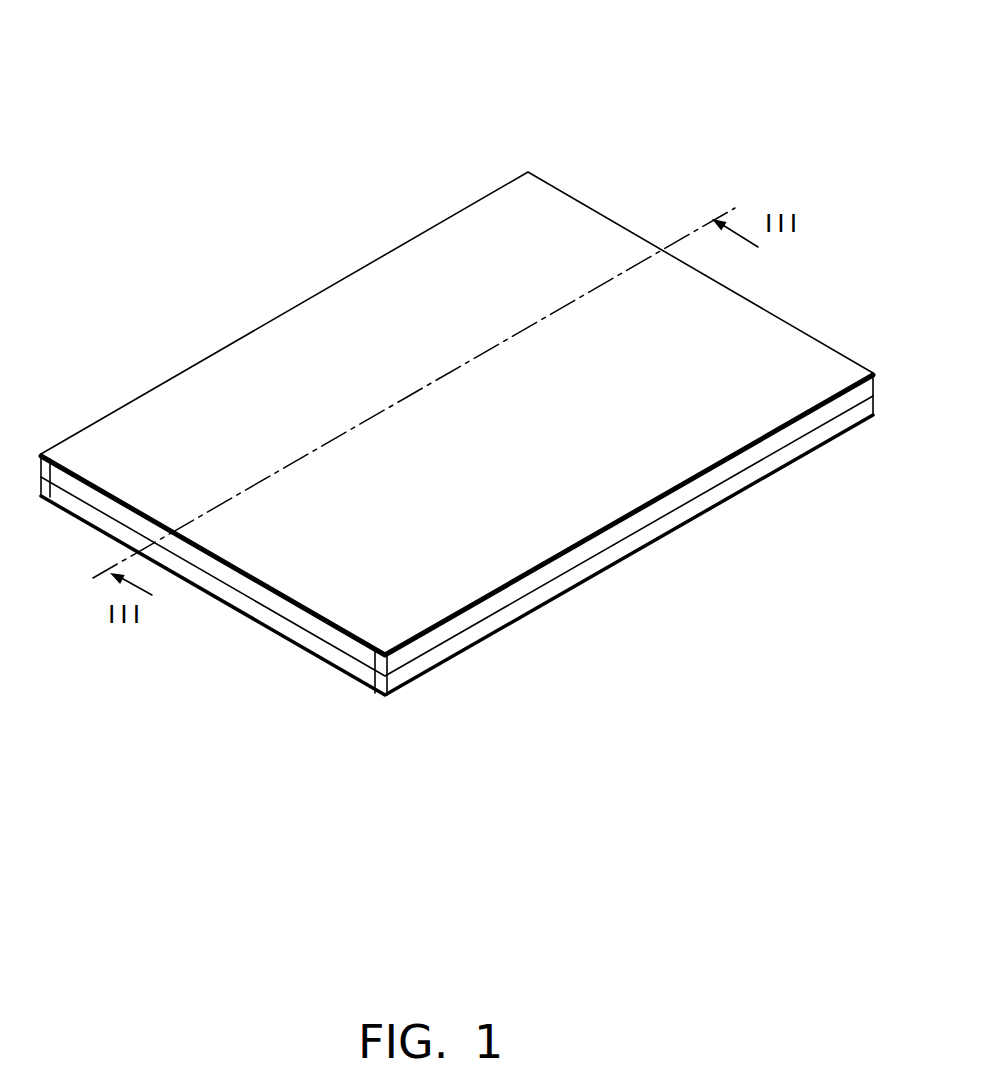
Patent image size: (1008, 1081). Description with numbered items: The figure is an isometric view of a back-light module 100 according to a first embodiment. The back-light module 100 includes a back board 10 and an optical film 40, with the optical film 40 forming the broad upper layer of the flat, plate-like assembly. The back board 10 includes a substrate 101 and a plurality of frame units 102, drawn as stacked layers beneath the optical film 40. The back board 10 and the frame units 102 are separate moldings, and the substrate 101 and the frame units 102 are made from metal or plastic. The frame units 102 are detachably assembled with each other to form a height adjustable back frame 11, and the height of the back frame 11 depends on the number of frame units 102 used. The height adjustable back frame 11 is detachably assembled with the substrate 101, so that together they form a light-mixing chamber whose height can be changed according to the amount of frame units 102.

The back-light module 100 is at (502, 45).
The optical film 40 is at (178, 422).
The back board 10 is at (457, 534).
The substrate 101 is at (603, 568).
The frame unit 102 is at (503, 593).
The height adjustable back frame 11 is at (457, 534).